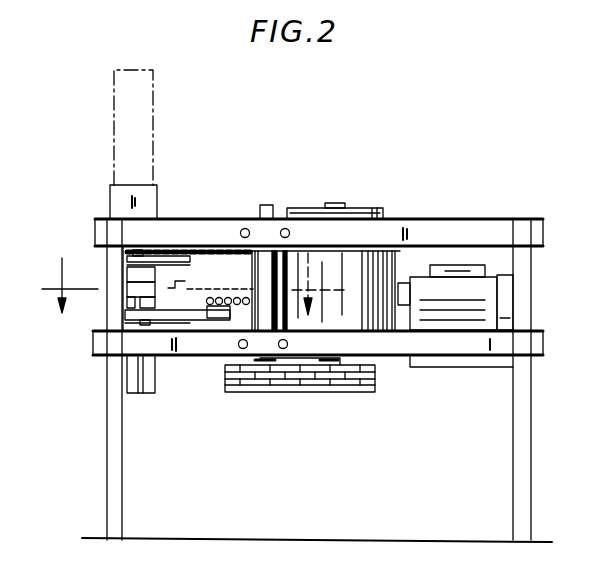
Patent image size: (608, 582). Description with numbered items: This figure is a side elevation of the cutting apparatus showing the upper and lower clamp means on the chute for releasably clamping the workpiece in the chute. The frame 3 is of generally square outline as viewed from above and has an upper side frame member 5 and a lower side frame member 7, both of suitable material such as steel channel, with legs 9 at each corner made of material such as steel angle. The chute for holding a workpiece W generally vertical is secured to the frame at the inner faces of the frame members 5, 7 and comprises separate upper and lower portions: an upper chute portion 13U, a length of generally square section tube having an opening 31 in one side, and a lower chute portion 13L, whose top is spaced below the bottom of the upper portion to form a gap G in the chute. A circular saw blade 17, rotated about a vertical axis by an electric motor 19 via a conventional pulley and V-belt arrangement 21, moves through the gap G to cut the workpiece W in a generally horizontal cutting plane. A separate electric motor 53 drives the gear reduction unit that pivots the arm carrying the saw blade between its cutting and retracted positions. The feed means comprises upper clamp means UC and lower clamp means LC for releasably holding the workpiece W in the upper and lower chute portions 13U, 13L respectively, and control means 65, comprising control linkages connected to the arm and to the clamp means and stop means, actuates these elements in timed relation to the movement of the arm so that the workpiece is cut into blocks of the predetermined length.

The workpiece W is at (143, 143).
The opening 31 is at (137, 251).
The upper chute portion 13U is at (160, 205).
The control means 65 is at (227, 252).
The electric motor 19 is at (365, 200).
The upper side frame member 5 is at (503, 222).
The upper clamp means UC is at (95, 252).
The frame 3 is at (192, 287).
The circular saw blade 17 is at (243, 266).
The gap G is at (152, 290).
The electric motor 53 is at (487, 303).
The lower clamp means LC is at (108, 317).
The lower chute portion 13L is at (155, 392).
The pulley and V-belt arrangement 21 is at (303, 392).
The lower side frame member 7 is at (447, 345).
The leg 9 is at (522, 407).